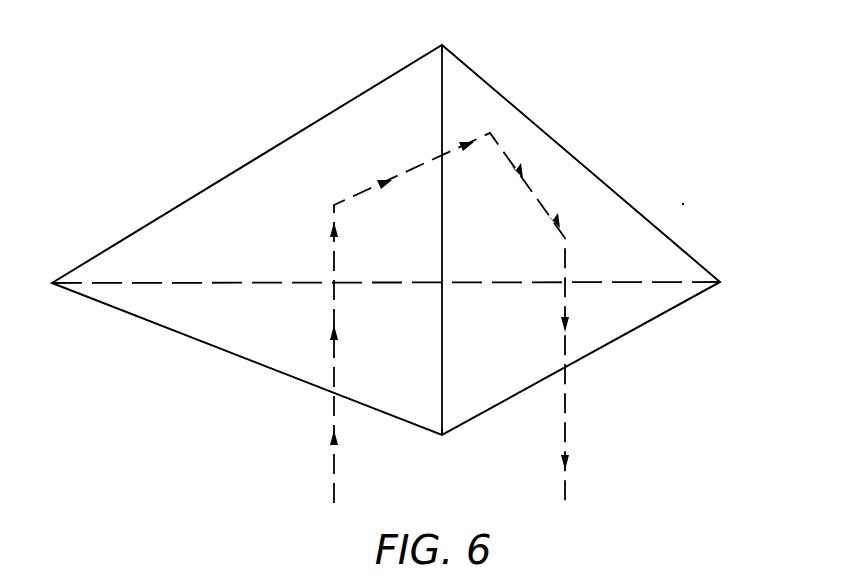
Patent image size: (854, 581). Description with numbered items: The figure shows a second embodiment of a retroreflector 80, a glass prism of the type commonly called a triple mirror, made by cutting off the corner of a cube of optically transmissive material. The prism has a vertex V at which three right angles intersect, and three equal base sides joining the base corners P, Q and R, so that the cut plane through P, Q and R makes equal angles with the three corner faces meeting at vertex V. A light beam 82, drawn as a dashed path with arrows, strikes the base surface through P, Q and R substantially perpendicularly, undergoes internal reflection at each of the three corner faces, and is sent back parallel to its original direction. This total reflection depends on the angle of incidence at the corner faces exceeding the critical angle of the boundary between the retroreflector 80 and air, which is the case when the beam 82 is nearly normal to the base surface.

The retroreflector 80 is at (562, 163).
The light beam 82 is at (335, 478).
The vertex V is at (442, 35).
The base corner Q is at (46, 284).
The base corner R is at (726, 284).
The base corner P is at (442, 442).